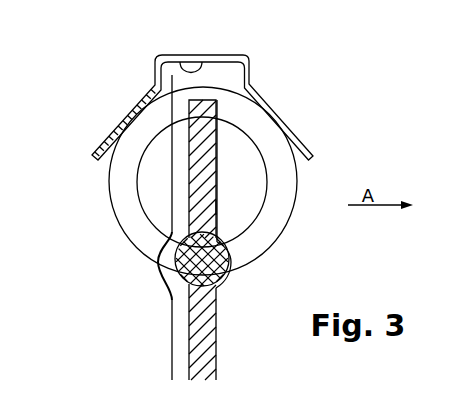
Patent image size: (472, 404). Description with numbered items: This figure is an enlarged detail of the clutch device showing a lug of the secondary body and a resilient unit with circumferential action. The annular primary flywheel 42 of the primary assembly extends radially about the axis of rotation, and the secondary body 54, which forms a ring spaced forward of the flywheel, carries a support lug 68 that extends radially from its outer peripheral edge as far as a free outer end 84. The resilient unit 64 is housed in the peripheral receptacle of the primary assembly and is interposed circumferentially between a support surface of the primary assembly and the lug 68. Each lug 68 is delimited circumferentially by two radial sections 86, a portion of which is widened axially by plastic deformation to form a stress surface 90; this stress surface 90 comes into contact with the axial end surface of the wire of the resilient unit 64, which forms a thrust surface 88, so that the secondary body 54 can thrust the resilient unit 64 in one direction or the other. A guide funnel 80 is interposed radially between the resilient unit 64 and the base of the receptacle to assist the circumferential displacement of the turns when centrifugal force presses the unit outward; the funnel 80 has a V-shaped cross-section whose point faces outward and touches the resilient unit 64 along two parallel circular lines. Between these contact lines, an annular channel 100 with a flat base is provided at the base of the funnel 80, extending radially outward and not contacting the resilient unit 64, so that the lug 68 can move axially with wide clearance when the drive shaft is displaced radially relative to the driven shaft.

The primary flywheel 42 is at (158, 183).
The secondary body 54 is at (217, 341).
The resilient unit 64 is at (139, 220).
The support lug 68 is at (230, 172).
The guide funnel 80 is at (270, 87).
The free outer end 84 is at (200, 102).
The radial section 86 is at (210, 210).
The thrust surface 88 is at (233, 264).
The stress surface 90 is at (157, 274).
The annular channel 100 is at (187, 67).